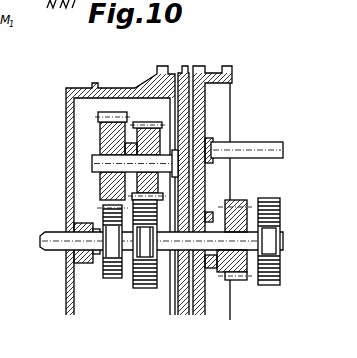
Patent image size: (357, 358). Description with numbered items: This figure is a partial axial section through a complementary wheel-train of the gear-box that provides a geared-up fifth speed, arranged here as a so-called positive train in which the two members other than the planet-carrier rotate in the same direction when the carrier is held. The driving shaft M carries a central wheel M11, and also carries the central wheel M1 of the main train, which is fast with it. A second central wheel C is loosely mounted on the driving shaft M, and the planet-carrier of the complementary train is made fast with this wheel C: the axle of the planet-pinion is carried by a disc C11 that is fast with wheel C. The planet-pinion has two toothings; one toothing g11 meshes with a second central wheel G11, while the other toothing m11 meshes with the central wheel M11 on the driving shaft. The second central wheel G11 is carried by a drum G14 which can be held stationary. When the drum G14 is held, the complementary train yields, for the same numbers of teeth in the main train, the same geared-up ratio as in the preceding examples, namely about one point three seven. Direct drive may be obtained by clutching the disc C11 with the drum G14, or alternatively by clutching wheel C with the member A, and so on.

The drum G14 is at (67, 92).
The planet-pinion toothing g11 is at (104, 114).
The planet-pinion toothing m11 is at (140, 123).
The disc C11 is at (184, 67).
The member A is at (200, 67).
The driving shaft M is at (53, 251).
The second central wheel G11 is at (112, 279).
The central wheel M11 is at (145, 289).
The second central wheel C is at (238, 281).
The central wheel M1 is at (273, 286).